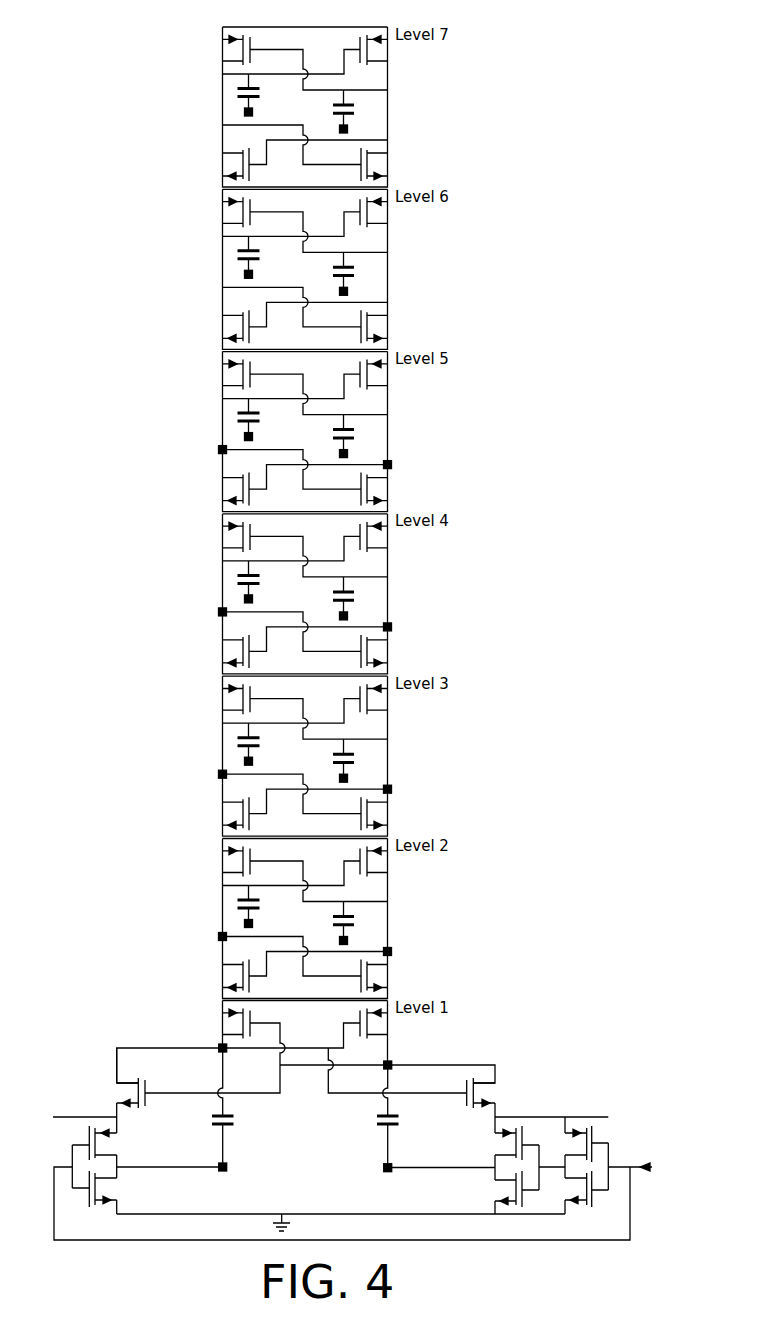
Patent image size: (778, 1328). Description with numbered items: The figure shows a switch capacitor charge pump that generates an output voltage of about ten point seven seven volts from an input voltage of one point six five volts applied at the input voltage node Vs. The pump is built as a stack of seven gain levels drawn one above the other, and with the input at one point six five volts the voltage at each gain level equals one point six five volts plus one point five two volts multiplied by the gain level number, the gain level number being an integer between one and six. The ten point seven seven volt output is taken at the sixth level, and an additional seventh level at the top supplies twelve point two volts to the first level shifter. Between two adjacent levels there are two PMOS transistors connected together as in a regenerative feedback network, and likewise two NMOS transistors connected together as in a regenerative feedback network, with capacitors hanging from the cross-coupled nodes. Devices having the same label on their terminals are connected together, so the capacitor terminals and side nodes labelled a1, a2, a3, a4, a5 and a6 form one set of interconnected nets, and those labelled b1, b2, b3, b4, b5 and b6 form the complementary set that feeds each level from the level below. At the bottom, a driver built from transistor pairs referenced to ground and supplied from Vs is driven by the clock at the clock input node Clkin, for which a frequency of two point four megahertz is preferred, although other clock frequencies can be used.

The node a1 is at (294, 1037).
The node a2 is at (238, 887).
The node a3 is at (239, 754).
The node a4 is at (239, 592).
The node a5 is at (239, 429).
The node a6 is at (239, 267).
The node b1 is at (318, 1029).
The node b2 is at (373, 904).
The node b3 is at (373, 769).
The node b4 is at (373, 607).
The node b5 is at (373, 444).
The node b6 is at (373, 282).
The input voltage node Vs is at (331, 1118).
The clock input node Clkin is at (651, 1168).
The element ground is at (341, 1224).